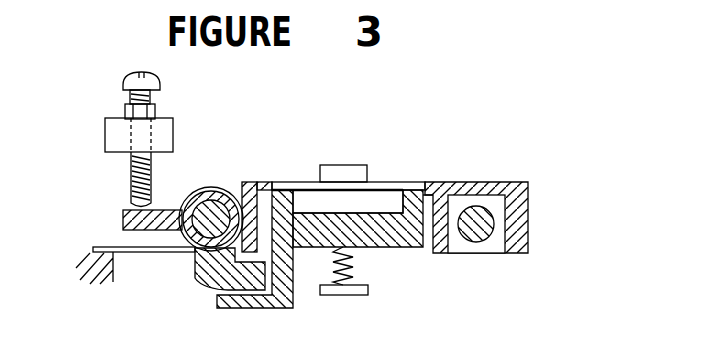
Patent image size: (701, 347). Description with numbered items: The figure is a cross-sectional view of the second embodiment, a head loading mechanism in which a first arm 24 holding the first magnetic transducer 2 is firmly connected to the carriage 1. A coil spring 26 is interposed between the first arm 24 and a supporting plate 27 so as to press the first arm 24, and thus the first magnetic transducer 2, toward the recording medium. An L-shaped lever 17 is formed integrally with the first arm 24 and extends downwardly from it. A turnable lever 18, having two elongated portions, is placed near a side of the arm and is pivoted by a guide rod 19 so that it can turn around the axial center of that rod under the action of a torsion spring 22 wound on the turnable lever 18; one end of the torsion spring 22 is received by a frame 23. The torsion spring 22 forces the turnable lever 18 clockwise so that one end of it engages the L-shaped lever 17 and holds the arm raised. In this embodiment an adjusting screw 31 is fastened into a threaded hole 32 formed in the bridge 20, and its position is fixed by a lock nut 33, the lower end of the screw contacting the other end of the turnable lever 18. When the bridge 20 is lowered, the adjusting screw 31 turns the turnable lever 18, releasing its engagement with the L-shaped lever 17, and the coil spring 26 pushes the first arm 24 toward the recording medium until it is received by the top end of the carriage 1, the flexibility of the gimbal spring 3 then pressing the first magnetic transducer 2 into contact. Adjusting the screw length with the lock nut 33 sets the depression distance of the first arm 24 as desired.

The carriage 1 is at (453, 183).
The first magnetic transducer 2 is at (338, 165).
The gimbal spring 3 is at (380, 188).
The L-shaped lever 17 is at (293, 300).
The turnable lever 18 is at (198, 281).
The guide rod 19 is at (213, 208).
The bridge 20 is at (167, 137).
The torsion spring 22 is at (147, 253).
The frame 23 is at (97, 262).
The first arm 24 is at (408, 248).
The coil spring 26 is at (348, 268).
The supporting plate 27 is at (347, 296).
The adjusting screw 31 is at (155, 80).
The threaded hole 32 is at (132, 138).
The lock nut 33 is at (156, 112).